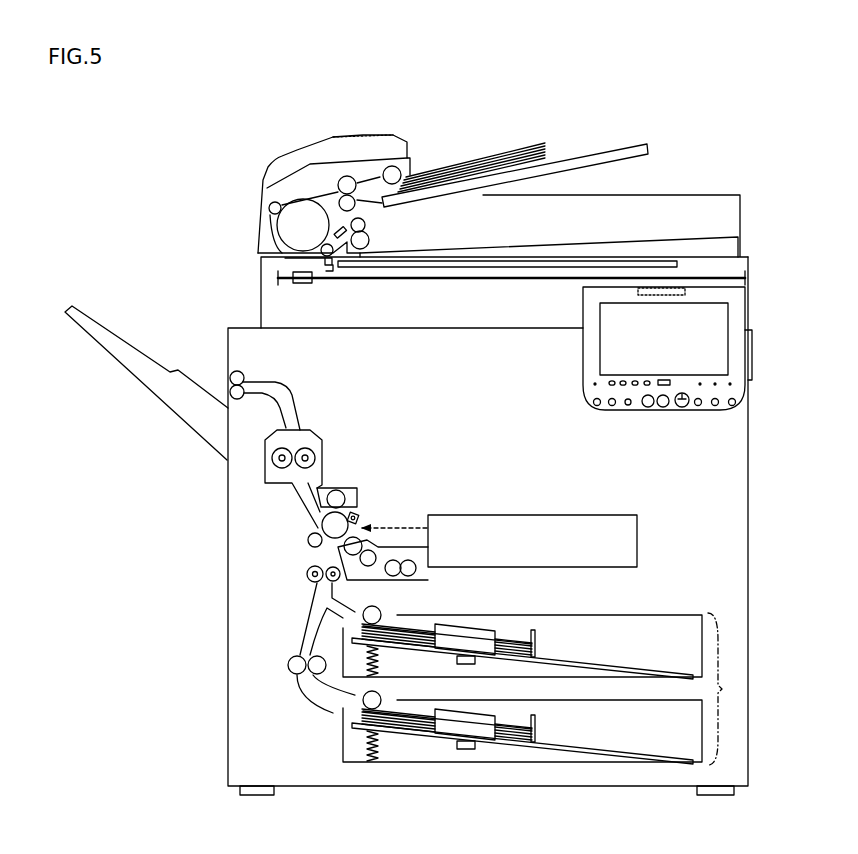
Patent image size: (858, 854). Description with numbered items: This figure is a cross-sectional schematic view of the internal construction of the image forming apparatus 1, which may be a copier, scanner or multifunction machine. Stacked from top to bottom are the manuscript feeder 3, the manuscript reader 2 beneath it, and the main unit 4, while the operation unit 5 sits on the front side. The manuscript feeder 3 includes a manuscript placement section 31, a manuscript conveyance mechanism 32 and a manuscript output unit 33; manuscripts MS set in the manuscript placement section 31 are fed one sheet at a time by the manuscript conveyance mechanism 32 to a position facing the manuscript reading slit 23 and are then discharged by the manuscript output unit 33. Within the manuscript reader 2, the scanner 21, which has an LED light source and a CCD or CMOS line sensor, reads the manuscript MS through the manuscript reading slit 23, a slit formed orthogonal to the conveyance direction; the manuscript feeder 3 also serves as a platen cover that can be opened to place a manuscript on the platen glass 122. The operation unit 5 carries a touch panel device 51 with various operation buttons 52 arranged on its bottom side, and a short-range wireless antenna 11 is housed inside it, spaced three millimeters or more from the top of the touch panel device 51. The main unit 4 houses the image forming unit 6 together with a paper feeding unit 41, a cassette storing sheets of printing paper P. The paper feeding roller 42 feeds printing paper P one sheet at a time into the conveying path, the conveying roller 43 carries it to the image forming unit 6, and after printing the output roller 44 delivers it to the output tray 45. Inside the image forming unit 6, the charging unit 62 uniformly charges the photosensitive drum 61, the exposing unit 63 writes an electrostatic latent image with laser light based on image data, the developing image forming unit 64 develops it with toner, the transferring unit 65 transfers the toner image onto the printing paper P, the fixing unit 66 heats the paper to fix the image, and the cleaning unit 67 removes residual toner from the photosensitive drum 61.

The image forming apparatus 1 is at (174, 170).
The manuscript reader 2 is at (250, 285).
The manuscript feeder 3 is at (407, 128).
The main unit 4 is at (753, 507).
The operation unit 5 is at (776, 331).
The image forming unit 6 is at (430, 497).
The short-range wireless antenna 11 is at (690, 292).
The scanner 21 is at (306, 285).
The manuscript reading slit 23 is at (312, 264).
The manuscript placement section 31 is at (625, 146).
The manuscript conveyance mechanism 32 is at (350, 137).
The manuscript output unit 33 is at (555, 246).
The paper feeding unit 41 is at (549, 689).
The paper feeding roller 42 is at (382, 615).
The conveying roller 43 is at (304, 573).
The output roller 44 is at (244, 374).
The output tray 45 is at (76, 309).
The touch panel device 51 is at (615, 350).
The operation buttons 52 is at (668, 408).
The photosensitive drum 61 is at (324, 524).
The charging unit 62 is at (361, 515).
The exposing unit 63 is at (605, 549).
The image forming unit 64 is at (426, 576).
The transferring unit 65 is at (308, 541).
The fixing unit 66 is at (326, 455).
The cleaning unit 67 is at (356, 490).
The platen glass 122 is at (628, 263).
The manuscript MS is at (522, 150).
The printing paper P is at (512, 634).